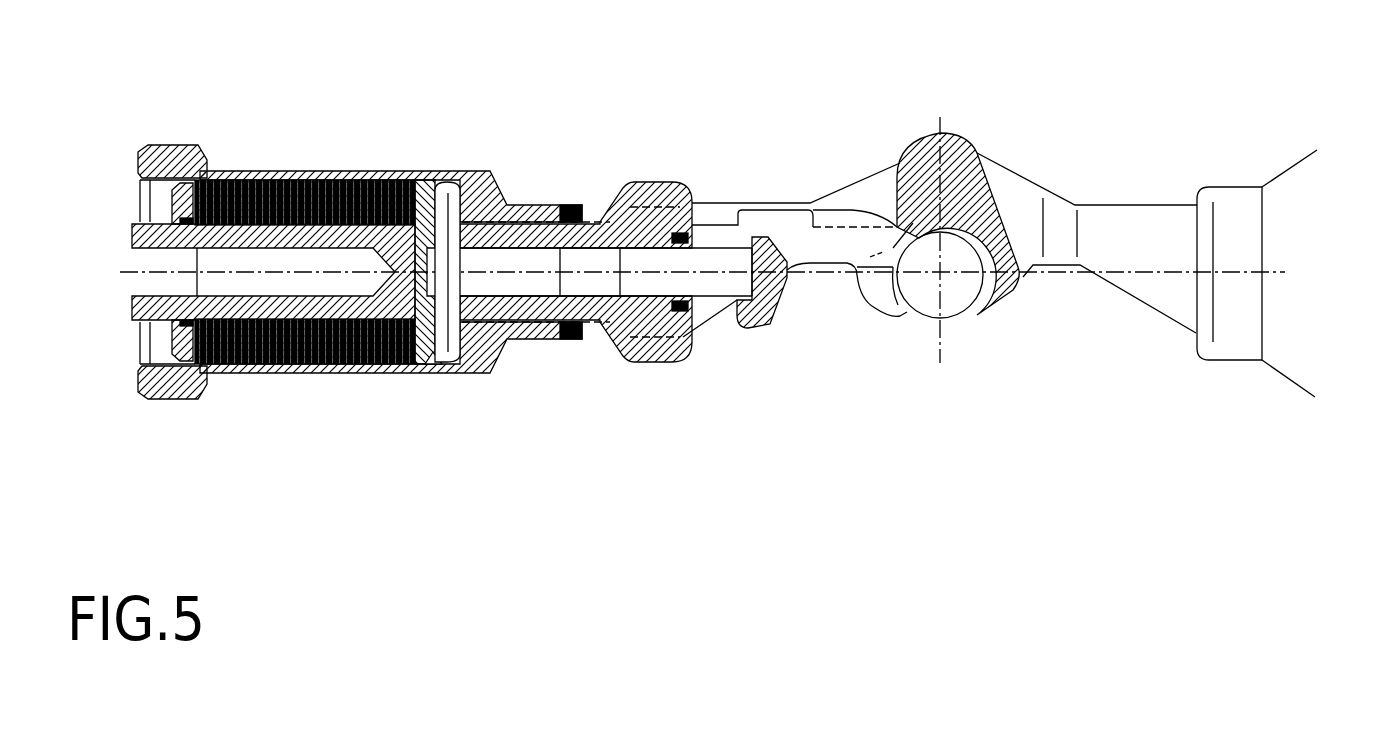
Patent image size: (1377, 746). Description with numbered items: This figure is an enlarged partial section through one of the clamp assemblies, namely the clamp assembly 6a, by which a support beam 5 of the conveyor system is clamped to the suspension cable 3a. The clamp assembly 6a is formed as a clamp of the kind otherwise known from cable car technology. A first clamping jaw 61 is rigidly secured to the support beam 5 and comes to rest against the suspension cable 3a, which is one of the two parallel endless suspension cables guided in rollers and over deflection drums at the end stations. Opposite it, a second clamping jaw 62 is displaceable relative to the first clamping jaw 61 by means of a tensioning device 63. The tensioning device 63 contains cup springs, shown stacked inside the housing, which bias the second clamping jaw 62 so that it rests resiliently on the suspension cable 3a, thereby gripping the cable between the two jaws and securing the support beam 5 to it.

The clamp assembly 6a is at (383, 168).
The tensioning device 63 is at (452, 375).
The second clamping jaw 62 is at (884, 296).
The suspension cable 3a is at (957, 303).
The first clamping jaw 61 is at (1012, 292).
The support beam 5 is at (1252, 242).